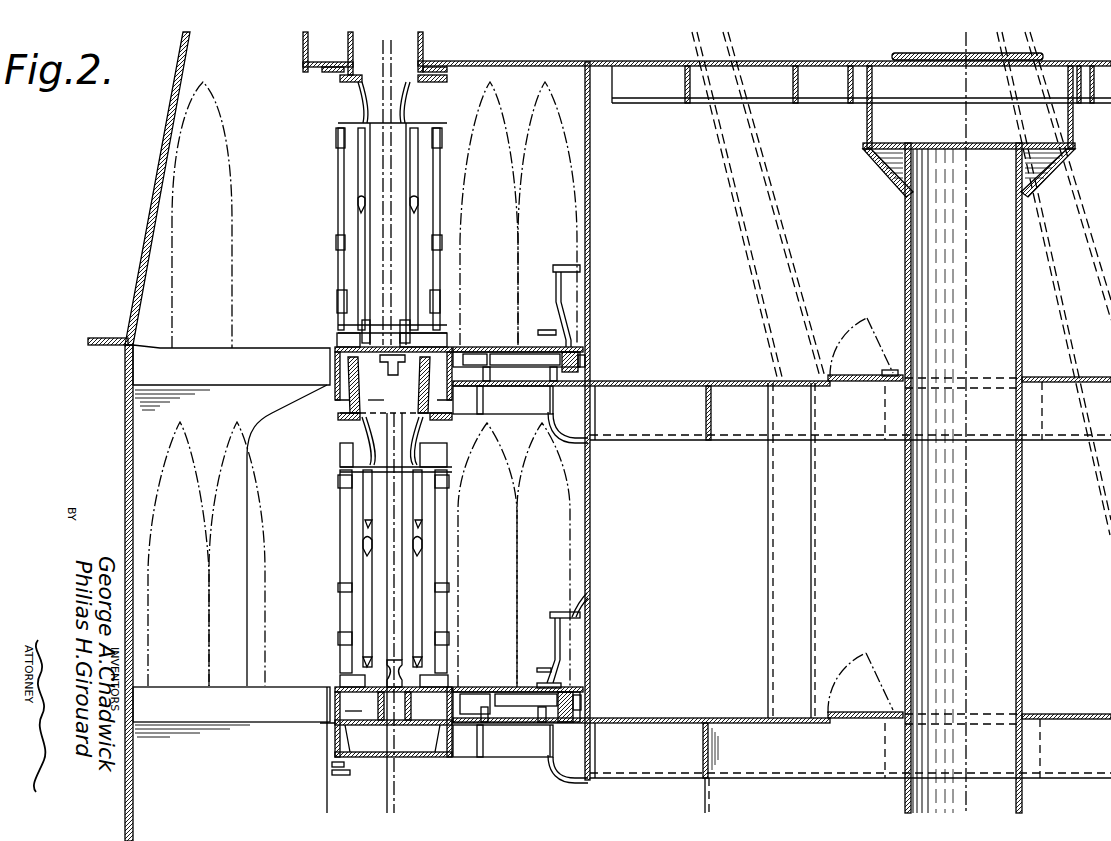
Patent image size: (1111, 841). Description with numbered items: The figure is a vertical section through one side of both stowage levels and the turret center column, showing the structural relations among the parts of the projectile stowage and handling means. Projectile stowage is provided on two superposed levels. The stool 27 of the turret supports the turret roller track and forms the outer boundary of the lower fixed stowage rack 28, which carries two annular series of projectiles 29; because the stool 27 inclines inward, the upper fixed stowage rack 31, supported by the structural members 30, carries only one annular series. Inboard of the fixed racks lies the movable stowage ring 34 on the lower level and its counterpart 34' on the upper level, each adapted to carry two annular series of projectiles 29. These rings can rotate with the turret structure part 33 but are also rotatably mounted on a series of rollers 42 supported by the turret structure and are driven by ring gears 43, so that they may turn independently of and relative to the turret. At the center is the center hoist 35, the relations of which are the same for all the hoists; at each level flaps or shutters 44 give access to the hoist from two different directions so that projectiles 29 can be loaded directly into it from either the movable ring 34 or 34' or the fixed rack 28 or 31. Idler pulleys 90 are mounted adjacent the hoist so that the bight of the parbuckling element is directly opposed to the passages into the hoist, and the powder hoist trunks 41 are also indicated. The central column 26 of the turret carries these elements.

The central tube 26 is at (1023, 518).
The stool 27 is at (147, 220).
The fixed stowage rack 28 is at (280, 688).
The projectiles 29 is at (230, 180).
The structural members 30 is at (270, 412).
The upper fixed stowage rack 31 is at (257, 347).
The turret structure part 33 is at (647, 383).
The movable stowage ring 34 is at (539, 640).
The movable stowage ring 34' is at (551, 306).
The center hoist 35 is at (386, 580).
The powder hoist trunks 41 is at (783, 272).
The rollers 42 is at (547, 375).
The ring gears 43 is at (545, 712).
The flaps or shutters 44 is at (353, 202).
The idler pulleys 90 is at (347, 328).